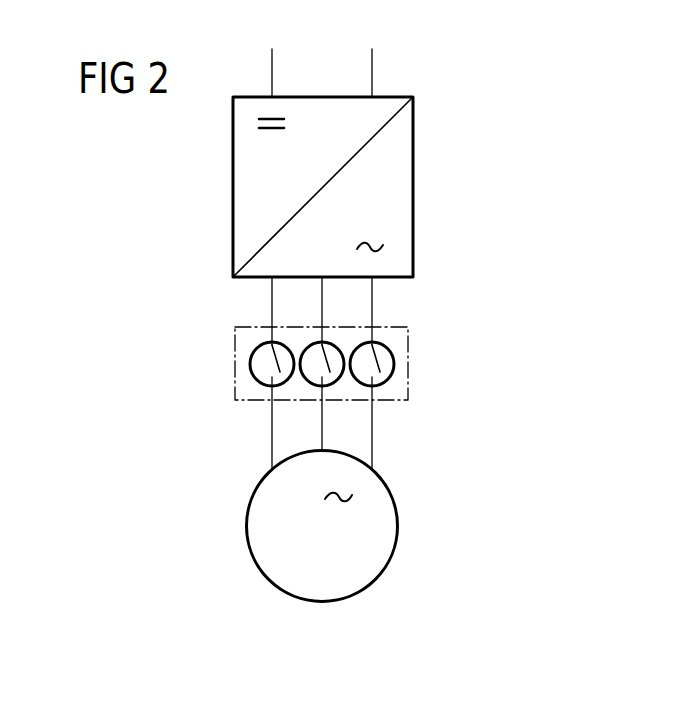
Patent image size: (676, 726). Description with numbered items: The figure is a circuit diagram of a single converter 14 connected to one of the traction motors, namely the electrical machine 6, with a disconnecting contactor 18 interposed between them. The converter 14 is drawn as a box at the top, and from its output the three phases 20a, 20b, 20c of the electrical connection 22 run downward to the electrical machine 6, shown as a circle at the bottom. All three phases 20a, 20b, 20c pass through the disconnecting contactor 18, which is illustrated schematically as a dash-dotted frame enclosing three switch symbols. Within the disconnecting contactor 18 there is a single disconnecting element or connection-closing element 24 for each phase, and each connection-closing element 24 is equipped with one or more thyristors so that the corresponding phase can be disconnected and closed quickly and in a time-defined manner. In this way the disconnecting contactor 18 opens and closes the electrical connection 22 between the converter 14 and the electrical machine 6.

The converter 14 is at (413, 157).
The first phase 20a is at (272, 288).
The second phase 20b is at (322, 303).
The third phase 20c is at (372, 297).
The disconnecting contactor 18 is at (410, 329).
The electrical connection 22 is at (298, 372).
The connection-closing element 24 is at (392, 380).
The electrical machine 6 is at (398, 525).